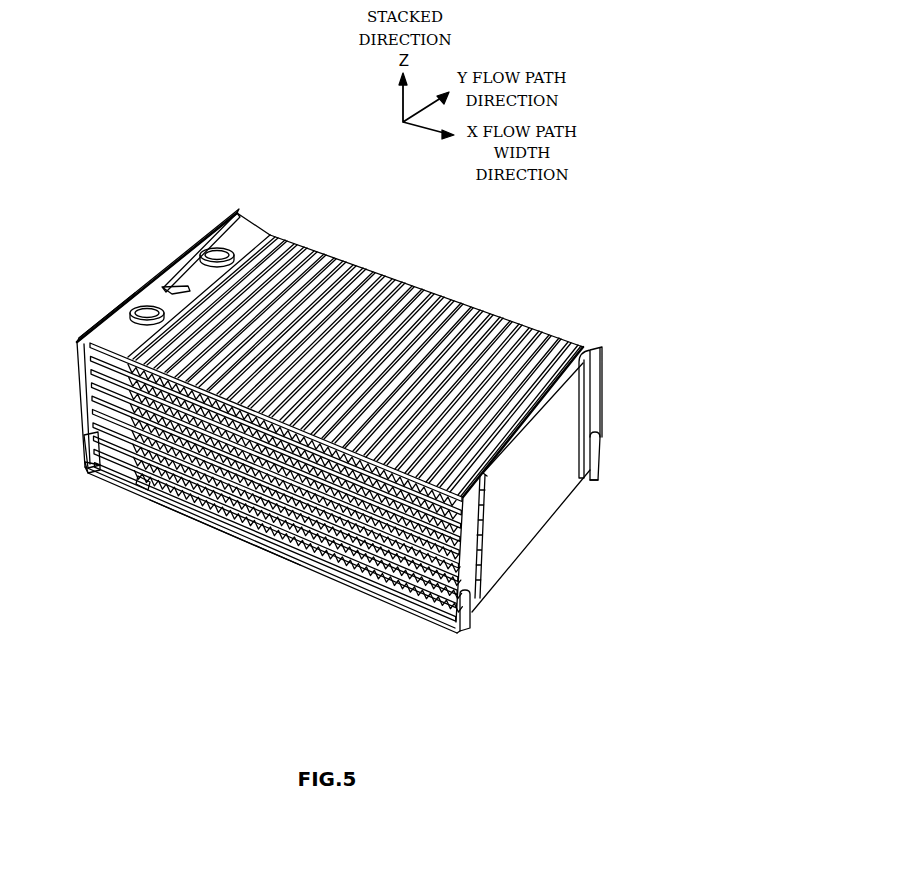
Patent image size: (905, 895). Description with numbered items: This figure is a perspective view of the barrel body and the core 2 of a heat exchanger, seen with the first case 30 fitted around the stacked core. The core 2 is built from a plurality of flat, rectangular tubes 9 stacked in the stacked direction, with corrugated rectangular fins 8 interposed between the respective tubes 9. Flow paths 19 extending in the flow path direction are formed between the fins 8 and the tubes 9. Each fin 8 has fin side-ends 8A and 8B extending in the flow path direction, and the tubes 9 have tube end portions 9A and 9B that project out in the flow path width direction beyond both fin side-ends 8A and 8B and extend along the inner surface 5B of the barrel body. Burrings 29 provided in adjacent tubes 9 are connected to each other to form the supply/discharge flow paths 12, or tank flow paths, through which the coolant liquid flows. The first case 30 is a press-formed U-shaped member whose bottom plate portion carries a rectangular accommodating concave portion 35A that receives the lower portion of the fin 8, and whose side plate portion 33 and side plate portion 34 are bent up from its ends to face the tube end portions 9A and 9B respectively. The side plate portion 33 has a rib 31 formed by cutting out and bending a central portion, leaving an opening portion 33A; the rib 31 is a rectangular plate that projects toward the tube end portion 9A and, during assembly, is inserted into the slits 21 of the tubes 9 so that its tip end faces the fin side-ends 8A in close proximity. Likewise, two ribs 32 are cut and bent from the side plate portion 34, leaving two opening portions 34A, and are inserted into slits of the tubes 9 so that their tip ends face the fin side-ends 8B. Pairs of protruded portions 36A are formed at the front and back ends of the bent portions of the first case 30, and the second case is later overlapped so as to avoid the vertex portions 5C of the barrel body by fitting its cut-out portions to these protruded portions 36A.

The core 2 is at (408, 592).
The inner surface of the barrel body 5B is at (183, 510).
The vertex portions of the barrel body 5C is at (90, 470).
The fins 8 is at (300, 238).
The fin side-end 8A is at (272, 238).
The fin side-end 8B is at (548, 368).
The tubes 9 is at (128, 460).
The tube end portion 9A is at (232, 243).
The tube end portion 9B is at (568, 370).
The supply/discharge flow paths 12 is at (215, 248).
The flow paths 19 is at (340, 552).
The slits 21 is at (160, 283).
The burrings 29 is at (222, 258).
The first case 30 is at (263, 555).
The rib 31 is at (195, 258).
The ribs 32 is at (580, 362).
The side plate portion 33 is at (83, 360).
The opening portion 33A is at (132, 303).
The side plate portion 34 is at (533, 513).
The opening portions 34A is at (488, 590).
The accommodating concave portion 35A is at (143, 483).
The protruded portions 36A is at (85, 459).